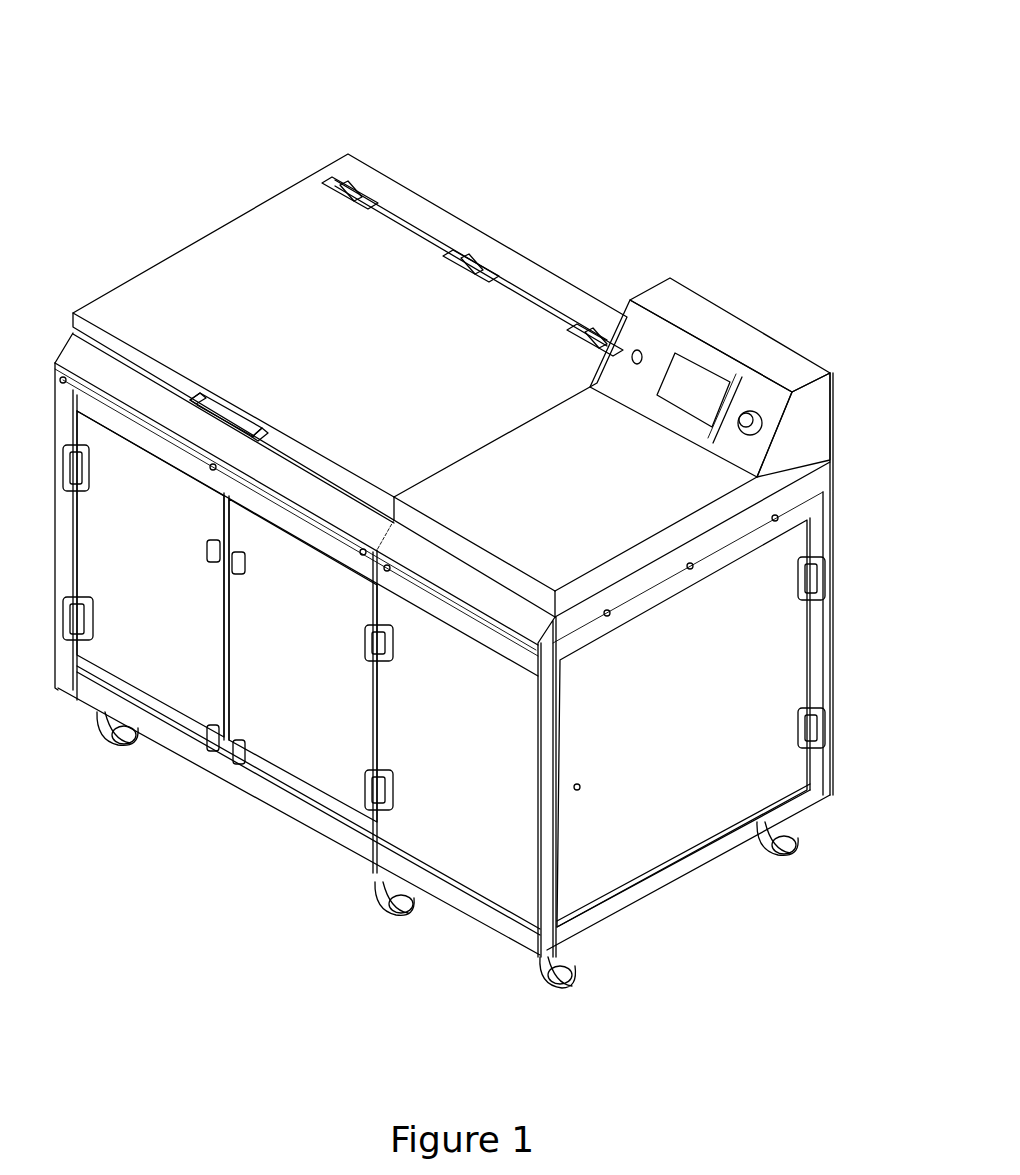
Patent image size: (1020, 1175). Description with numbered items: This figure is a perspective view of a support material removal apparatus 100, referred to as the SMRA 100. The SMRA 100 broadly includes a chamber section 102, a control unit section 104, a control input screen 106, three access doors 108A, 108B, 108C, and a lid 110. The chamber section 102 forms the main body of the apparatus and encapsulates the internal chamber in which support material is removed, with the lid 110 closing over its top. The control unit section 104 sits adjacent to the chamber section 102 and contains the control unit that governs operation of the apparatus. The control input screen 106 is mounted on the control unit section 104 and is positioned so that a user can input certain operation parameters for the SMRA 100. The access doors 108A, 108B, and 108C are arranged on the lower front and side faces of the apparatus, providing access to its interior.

The support material removal apparatus 100 is at (537, 115).
The chamber section 102 is at (543, 210).
The control unit section 104 is at (783, 303).
The control input screen 106 is at (709, 341).
The access door 108A is at (681, 815).
The access door 108B is at (274, 729).
The access door 108C is at (149, 683).
The lid 110 is at (202, 252).